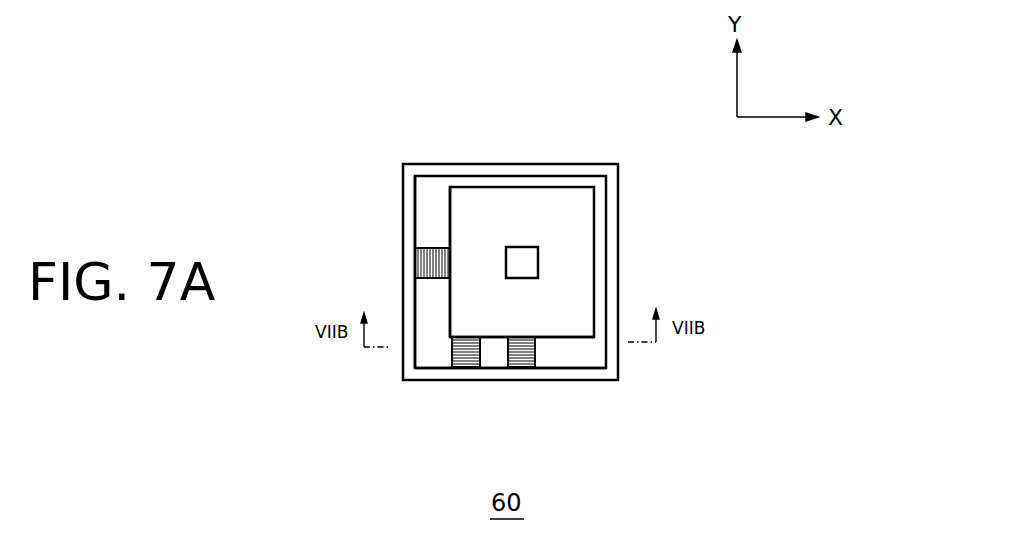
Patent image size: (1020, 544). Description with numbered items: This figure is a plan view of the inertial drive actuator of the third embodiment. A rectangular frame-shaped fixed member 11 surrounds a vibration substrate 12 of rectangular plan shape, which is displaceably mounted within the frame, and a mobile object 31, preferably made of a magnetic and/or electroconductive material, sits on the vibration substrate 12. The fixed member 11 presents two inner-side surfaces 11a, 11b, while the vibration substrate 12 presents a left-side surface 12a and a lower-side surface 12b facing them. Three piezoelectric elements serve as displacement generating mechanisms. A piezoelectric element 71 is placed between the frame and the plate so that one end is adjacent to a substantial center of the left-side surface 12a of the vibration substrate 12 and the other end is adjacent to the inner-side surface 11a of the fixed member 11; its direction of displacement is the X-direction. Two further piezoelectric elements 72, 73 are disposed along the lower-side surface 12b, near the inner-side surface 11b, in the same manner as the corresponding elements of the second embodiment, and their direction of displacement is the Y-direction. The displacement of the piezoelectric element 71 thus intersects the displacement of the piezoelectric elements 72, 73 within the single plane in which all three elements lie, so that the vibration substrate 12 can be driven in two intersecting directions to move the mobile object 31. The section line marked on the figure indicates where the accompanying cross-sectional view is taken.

The fixed member 11 is at (408, 193).
The inner-side surface 11a is at (413, 227).
The inner-side surface 11b is at (587, 366).
The vibration substrate 12 is at (469, 322).
The left-side surface 12a is at (449, 212).
The lower-side surface 12b is at (565, 337).
The mobile object 31 is at (538, 257).
The piezoelectric element 71 is at (427, 262).
The piezoelectric element 72 is at (458, 357).
The piezoelectric element 73 is at (518, 357).